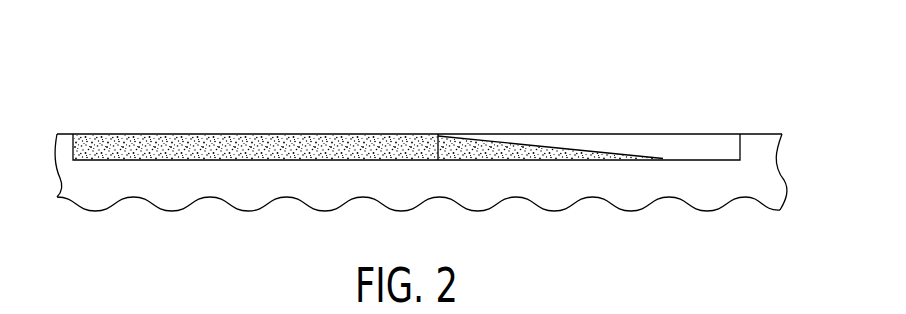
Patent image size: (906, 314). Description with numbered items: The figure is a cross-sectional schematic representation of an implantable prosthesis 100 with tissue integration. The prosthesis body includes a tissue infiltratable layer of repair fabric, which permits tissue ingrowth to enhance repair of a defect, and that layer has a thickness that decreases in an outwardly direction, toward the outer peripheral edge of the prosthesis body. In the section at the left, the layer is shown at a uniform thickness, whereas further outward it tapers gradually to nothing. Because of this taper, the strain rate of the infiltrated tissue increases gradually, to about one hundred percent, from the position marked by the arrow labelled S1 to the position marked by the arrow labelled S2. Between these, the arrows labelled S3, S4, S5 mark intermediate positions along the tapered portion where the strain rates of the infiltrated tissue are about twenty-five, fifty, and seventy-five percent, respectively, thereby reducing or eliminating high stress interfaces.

The implantable prosthesis 100 is at (125, 142).
The arrow labelled S1 is at (271, 115).
The arrow labelled S2 is at (705, 115).
The arrow labelled S3 is at (504, 115).
The arrow labelled S4 is at (575, 115).
The arrow labelled S5 is at (647, 115).